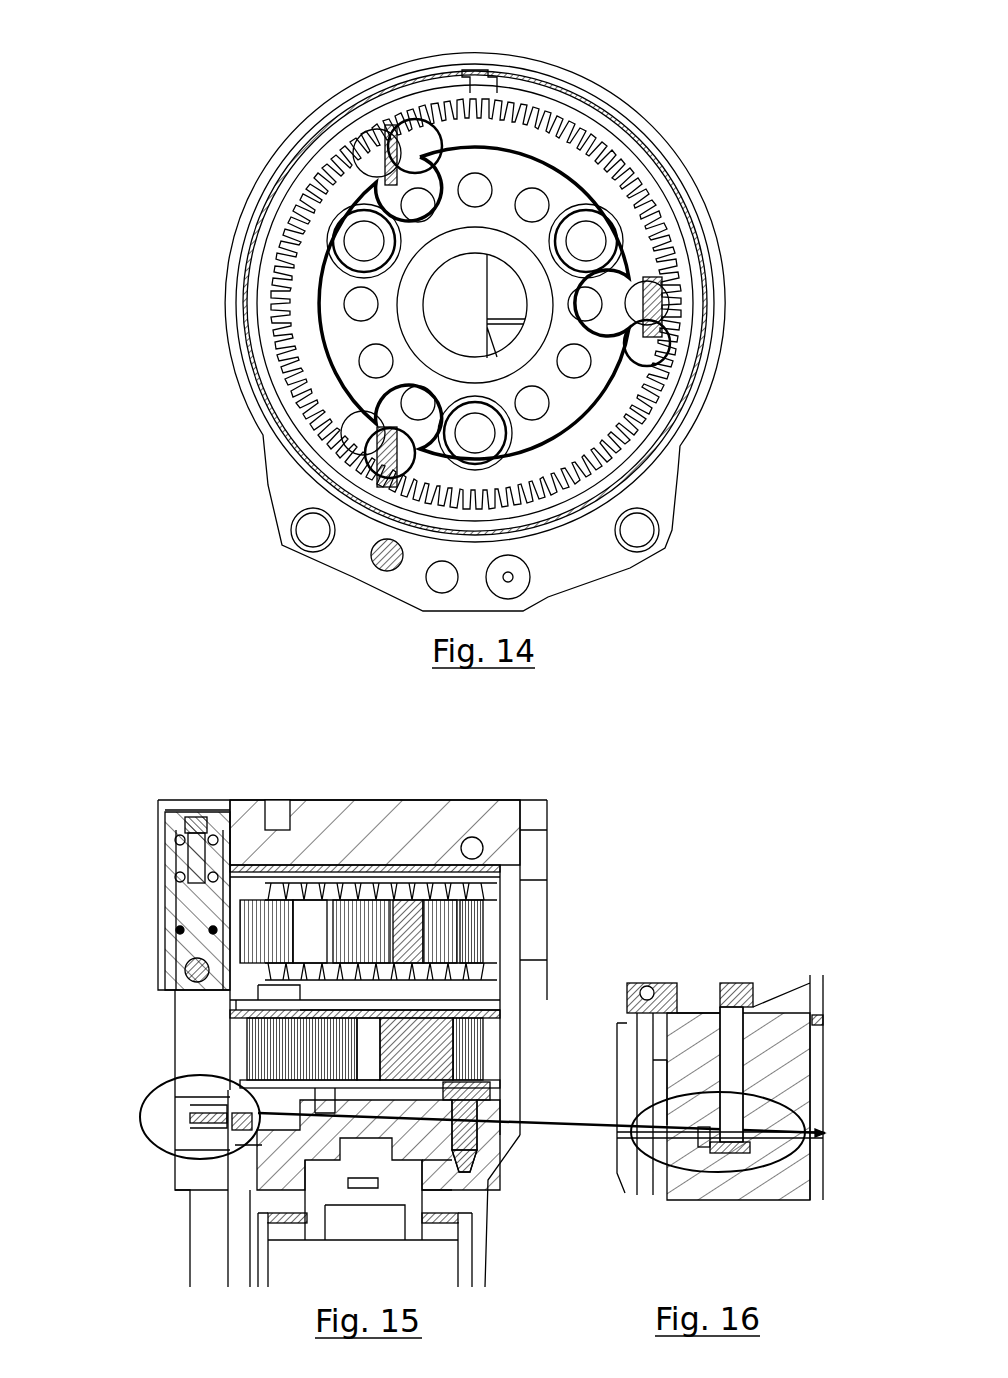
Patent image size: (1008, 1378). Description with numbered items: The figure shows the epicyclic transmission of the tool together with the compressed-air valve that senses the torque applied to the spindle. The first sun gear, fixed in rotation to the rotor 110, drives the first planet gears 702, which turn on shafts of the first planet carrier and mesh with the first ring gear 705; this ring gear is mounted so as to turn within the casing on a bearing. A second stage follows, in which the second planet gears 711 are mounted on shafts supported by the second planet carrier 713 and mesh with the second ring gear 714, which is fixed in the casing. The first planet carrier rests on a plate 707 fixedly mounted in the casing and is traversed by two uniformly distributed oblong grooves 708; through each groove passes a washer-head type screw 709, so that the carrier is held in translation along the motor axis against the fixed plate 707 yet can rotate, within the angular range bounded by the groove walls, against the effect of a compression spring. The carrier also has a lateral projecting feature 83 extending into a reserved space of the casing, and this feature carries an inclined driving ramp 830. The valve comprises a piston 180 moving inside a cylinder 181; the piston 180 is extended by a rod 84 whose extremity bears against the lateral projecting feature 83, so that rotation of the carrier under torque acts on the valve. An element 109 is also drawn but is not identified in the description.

In FIG. 14, the first ring gear 705 is at (653, 195).
In FIG. 15, the first ring gear 705 is at (223, 1057).
In FIG. 14, the oblong grooves 708 is at (423, 142).
In FIG. 14, the washer-head type screw 709 is at (368, 152).
In FIG. 15, the washer-head type screw 709 is at (477, 1107).
In FIG. 15, the second planet gears 711 is at (443, 917).
In FIG. 15, the second planet carrier 713 is at (312, 893).
In FIG. 15, the second ring gear 714 is at (480, 938).
In FIG. 15, the first planet gears 702 is at (433, 1058).
In FIG. 15, the piston 180 is at (160, 940).
In FIG. 15, the cylinder 181 is at (218, 838).
In FIG. 15, the rod 84 is at (195, 1015).
In FIG. 16, the rod 84 is at (728, 1038).
In FIG. 15, the inclined driving ramp 830 is at (197, 1116).
In FIG. 16, the inclined driving ramp 830 is at (713, 1145).
In FIG. 15, the lateral projecting feature 83 is at (228, 1108).
In FIG. 16, the lateral projecting feature 83 is at (700, 1147).
In FIG. 15, the bearing 109 is at (262, 1140).
In FIG. 15, the plate 707 is at (440, 1180).
In FIG. 15, the rotor 110 is at (410, 1198).